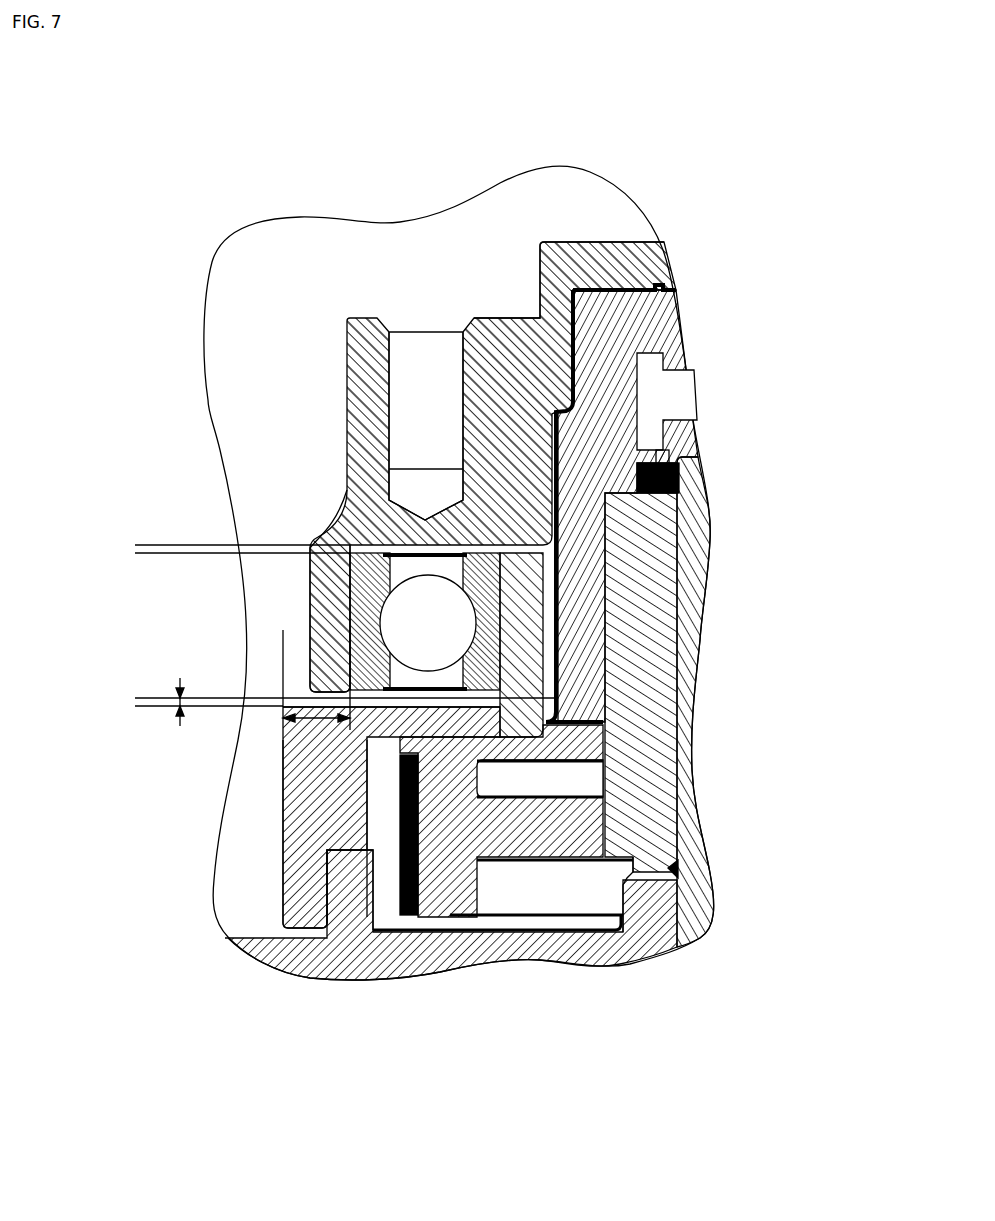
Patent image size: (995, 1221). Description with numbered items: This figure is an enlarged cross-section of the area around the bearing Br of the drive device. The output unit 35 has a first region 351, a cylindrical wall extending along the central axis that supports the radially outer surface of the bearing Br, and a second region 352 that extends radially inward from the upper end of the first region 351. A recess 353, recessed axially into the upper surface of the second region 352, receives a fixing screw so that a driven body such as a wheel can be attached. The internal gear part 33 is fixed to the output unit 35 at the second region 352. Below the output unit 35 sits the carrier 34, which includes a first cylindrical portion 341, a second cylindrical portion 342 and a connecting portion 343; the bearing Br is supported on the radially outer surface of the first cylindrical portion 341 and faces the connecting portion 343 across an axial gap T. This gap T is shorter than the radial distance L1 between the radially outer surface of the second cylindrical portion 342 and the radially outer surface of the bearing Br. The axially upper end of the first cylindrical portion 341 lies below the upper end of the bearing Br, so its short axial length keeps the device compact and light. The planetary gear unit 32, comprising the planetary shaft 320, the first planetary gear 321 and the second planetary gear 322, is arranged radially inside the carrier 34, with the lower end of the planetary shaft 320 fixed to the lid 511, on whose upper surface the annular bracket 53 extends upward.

The output unit 35 is at (347, 380).
The first region 351 is at (300, 602).
The second region 352 is at (507, 332).
The recess 353 is at (425, 365).
The internal gear part 33 is at (670, 330).
The planetary shaft 320 is at (705, 515).
The first planetary gear 321 is at (600, 780).
The second planetary gear 322 is at (665, 627).
The planetary gear unit 32 is at (688, 865).
The carrier 34 is at (283, 795).
The first cylindrical portion 341 is at (517, 655).
The second cylindrical portion 342 is at (283, 833).
The connecting portion 343 is at (455, 717).
The bracket 53 is at (300, 908).
The lid 511 is at (530, 962).
The bearing Br is at (300, 618).
The gap T is at (180, 700).
The radial distance L1 is at (290, 742).